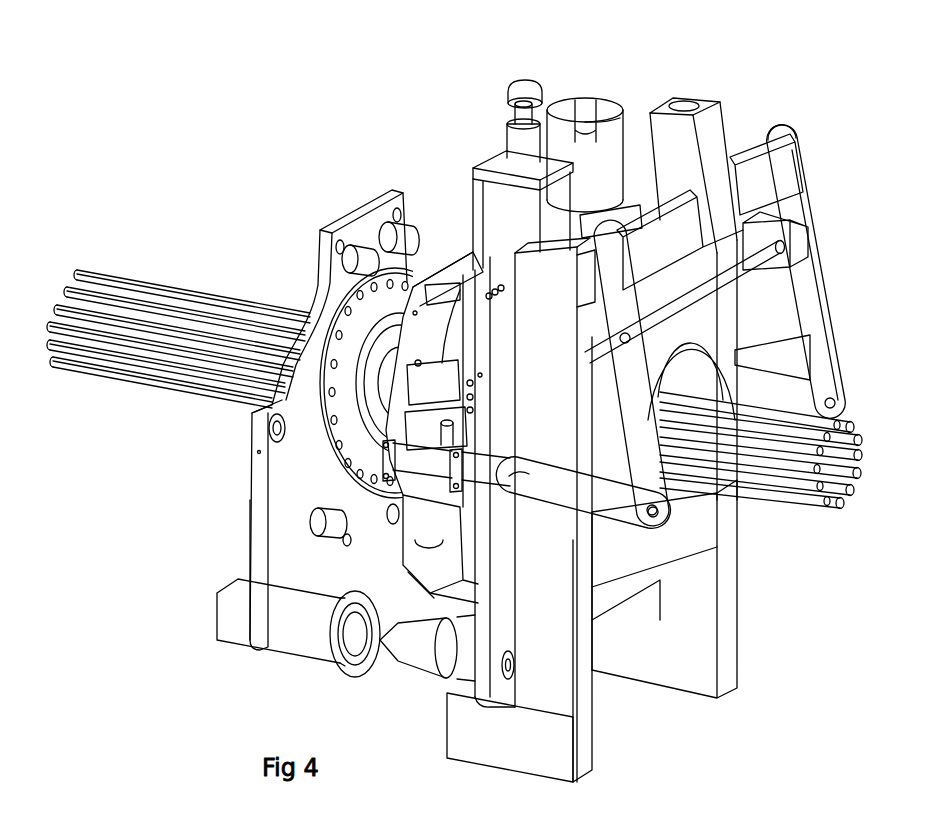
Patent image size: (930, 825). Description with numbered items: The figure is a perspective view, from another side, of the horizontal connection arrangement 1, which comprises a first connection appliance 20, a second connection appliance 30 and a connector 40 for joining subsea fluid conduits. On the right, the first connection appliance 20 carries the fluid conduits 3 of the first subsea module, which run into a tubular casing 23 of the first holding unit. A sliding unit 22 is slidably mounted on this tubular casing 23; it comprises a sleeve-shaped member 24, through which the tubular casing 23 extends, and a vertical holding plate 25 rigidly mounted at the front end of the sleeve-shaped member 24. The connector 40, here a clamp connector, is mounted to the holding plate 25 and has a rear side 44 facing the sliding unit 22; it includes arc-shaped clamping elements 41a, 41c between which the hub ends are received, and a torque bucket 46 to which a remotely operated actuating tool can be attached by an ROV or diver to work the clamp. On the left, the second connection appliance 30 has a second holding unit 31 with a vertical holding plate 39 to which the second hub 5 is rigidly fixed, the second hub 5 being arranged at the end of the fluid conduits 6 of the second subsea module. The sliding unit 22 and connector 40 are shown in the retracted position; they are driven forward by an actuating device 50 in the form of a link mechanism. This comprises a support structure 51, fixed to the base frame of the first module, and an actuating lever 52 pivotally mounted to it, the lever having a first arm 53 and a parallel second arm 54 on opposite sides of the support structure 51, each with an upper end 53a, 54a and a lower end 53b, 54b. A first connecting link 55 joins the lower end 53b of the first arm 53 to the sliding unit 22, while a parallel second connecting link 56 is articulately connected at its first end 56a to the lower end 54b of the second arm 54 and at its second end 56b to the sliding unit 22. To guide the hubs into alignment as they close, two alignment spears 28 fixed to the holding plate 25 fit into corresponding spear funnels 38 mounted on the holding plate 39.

The horizontal connection arrangement 1 is at (396, 76).
The fluid conduits 3 is at (790, 492).
The second hub 5 is at (378, 397).
The fluid conduits 6 is at (160, 297).
The first connection appliance 20 is at (647, 88).
The sliding unit 22 is at (700, 318).
The tubular casing 23 is at (680, 358).
The sleeve-shaped member 24 is at (590, 550).
The holding plate 25 is at (420, 560).
The alignment spears 28 is at (413, 650).
The second connection appliance 30 is at (292, 230).
The second holding unit 31 is at (350, 205).
The spear funnels 38 is at (300, 640).
The holding plate 39 is at (256, 502).
The connector 40 is at (460, 247).
The clamping element 41a is at (503, 262).
The clamping element 41c is at (456, 362).
The rear side 44 is at (520, 302).
The torque bucket 46 is at (560, 118).
The actuating device 50 is at (772, 90).
The support structure 51 is at (725, 573).
The actuating lever 52 is at (752, 140).
The first arm 53 is at (805, 200).
The upper end 53a is at (786, 134).
The lower end 53b is at (838, 395).
The second arm 54 is at (617, 350).
The upper end 54a is at (612, 233).
The lower end 54b is at (660, 512).
The first connecting link 55 is at (778, 380).
The second connecting link 56 is at (555, 490).
The first end 56a is at (650, 522).
The second end 56b is at (530, 456).